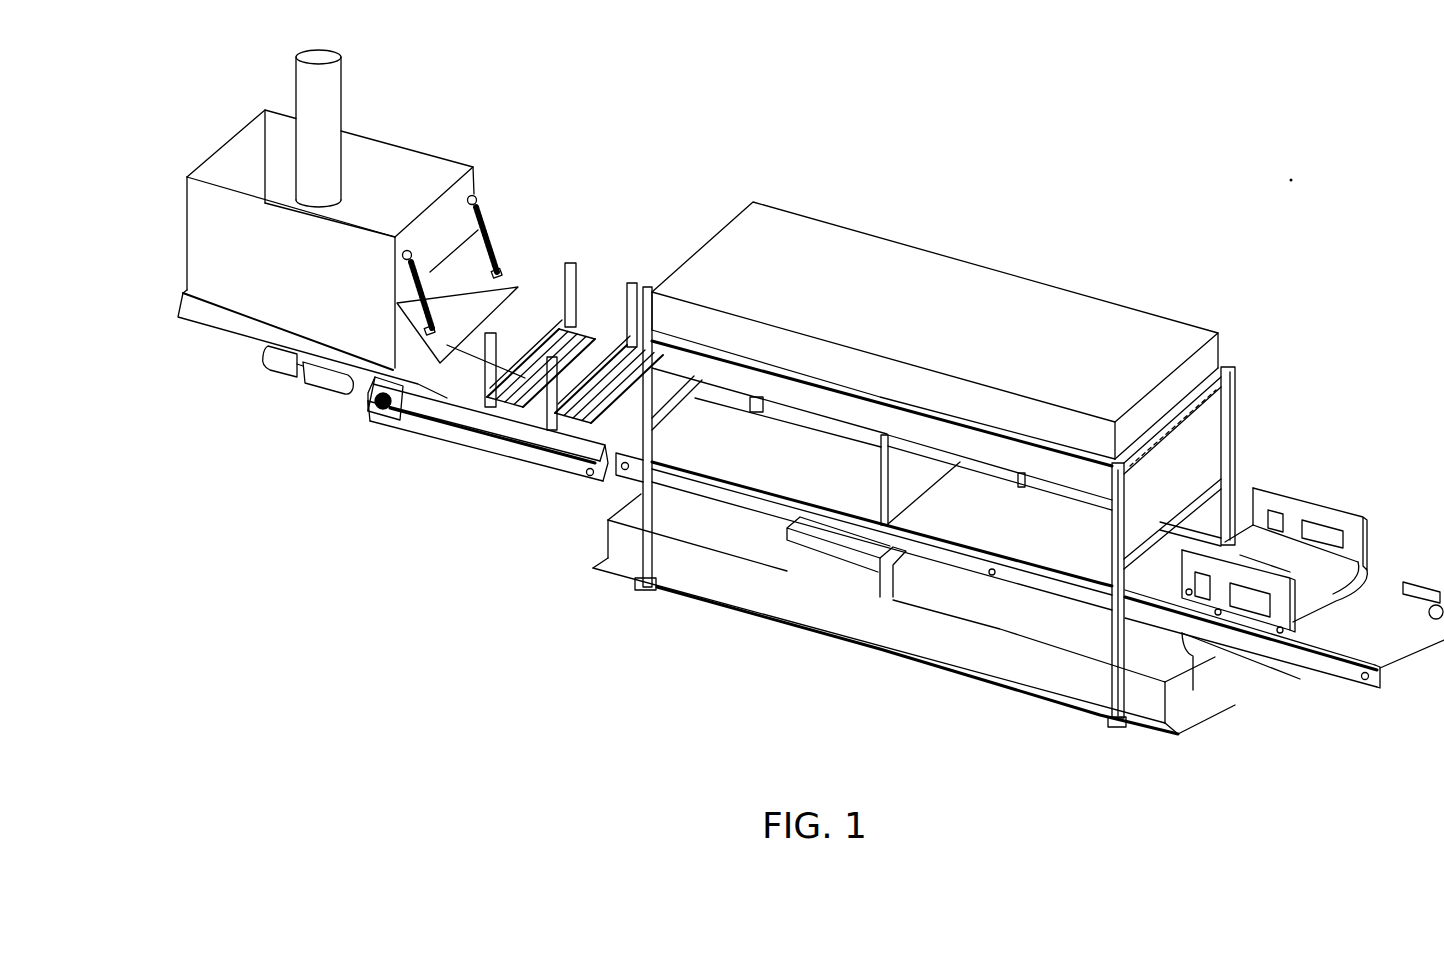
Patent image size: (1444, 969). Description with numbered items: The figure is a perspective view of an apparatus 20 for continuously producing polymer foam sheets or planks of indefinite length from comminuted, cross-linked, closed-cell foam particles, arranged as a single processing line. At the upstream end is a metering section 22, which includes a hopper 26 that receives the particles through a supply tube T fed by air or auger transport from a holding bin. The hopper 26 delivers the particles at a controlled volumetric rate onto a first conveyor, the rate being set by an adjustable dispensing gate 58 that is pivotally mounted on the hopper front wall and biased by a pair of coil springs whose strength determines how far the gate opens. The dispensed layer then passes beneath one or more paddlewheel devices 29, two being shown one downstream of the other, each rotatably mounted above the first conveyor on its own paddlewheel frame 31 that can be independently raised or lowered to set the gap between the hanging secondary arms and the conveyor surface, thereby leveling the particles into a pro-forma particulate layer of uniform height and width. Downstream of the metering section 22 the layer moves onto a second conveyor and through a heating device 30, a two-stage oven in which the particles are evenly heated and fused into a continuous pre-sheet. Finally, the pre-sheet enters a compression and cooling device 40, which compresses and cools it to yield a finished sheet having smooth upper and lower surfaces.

The supply tube T is at (306, 82).
The apparatus 20 is at (1162, 116).
The metering section 22 is at (416, 138).
The hopper 26 is at (192, 240).
The paddlewheel devices 29 is at (610, 324).
The heating device 30 is at (1108, 292).
The paddlewheel frame 31 is at (637, 283).
The compression and cooling device 40 is at (1346, 497).
The dispensing gate 58 is at (447, 340).